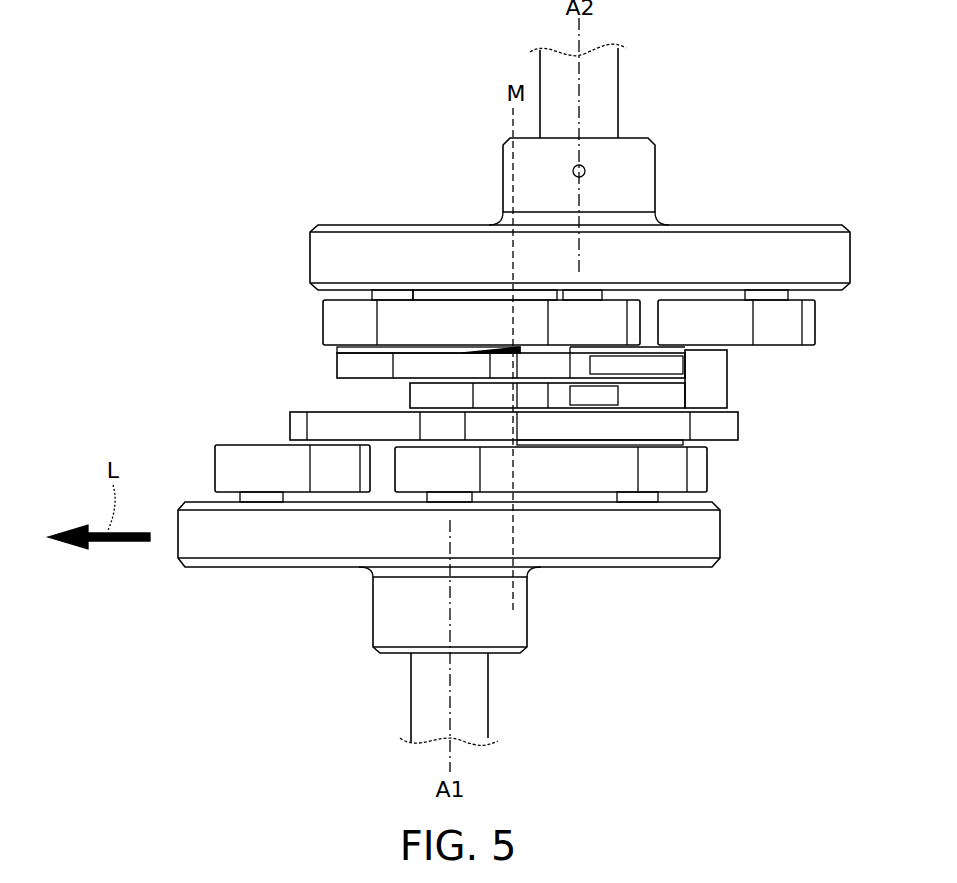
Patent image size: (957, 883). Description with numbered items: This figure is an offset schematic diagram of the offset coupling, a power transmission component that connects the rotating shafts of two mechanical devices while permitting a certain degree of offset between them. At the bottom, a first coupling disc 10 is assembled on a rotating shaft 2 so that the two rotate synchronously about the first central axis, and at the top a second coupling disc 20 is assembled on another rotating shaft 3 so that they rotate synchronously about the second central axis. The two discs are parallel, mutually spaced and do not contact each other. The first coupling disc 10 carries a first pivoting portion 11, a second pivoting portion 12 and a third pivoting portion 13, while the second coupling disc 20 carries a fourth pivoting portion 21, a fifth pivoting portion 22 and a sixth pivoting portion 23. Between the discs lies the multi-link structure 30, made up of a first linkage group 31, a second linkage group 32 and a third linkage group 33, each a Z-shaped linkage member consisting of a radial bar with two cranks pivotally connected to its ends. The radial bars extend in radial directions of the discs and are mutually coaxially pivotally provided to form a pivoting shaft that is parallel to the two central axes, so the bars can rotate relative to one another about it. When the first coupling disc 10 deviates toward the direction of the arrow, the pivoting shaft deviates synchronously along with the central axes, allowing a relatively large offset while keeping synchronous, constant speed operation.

The rotating shaft 2 is at (480, 698).
The rotating shaft 3 is at (608, 95).
The first coupling disc 10 is at (212, 547).
The first pivoting portion 11 is at (263, 497).
The second pivoting portion 12 is at (643, 497).
The third pivoting portion 13 is at (437, 495).
The second coupling disc 20 is at (342, 247).
The fourth pivoting portion 21 is at (778, 292).
The fifth pivoting portion 22 is at (390, 292).
The sixth pivoting portion 23 is at (592, 292).
The multi-link structure 30 is at (826, 357).
The first linkage group 31 is at (724, 430).
The second linkage group 32 is at (618, 398).
The third linkage group 33 is at (676, 367).